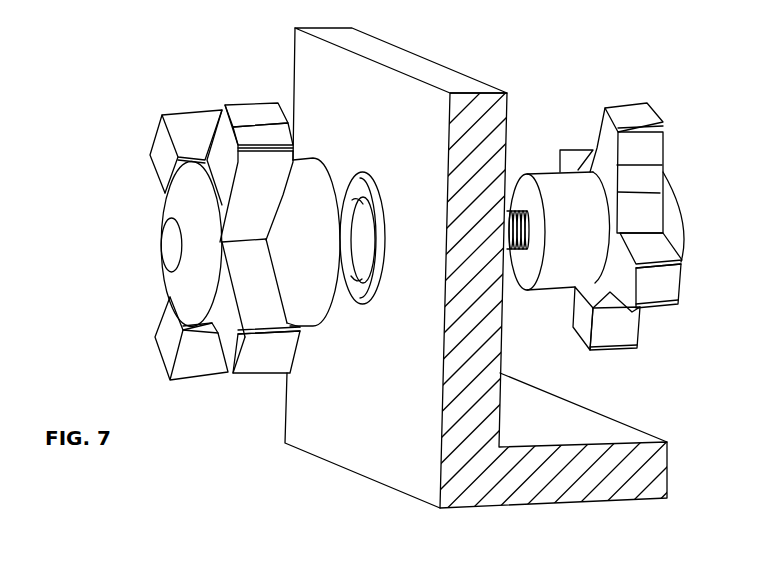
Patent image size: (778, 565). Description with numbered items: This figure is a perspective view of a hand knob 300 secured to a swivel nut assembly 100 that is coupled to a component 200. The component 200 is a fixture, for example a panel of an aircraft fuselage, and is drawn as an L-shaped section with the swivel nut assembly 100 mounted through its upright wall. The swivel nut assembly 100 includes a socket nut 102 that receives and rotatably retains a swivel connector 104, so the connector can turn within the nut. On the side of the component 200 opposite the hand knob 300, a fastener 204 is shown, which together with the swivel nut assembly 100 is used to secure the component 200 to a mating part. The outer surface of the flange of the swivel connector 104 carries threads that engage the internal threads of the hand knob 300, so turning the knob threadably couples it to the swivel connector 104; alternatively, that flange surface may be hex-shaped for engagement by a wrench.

The swivel nut assembly 100 is at (353, 178).
The socket nut 102 is at (375, 205).
The swivel connector 104 is at (360, 250).
The first component 200 is at (415, 417).
The fastener 204 is at (525, 177).
The hand knob 300 is at (162, 147).